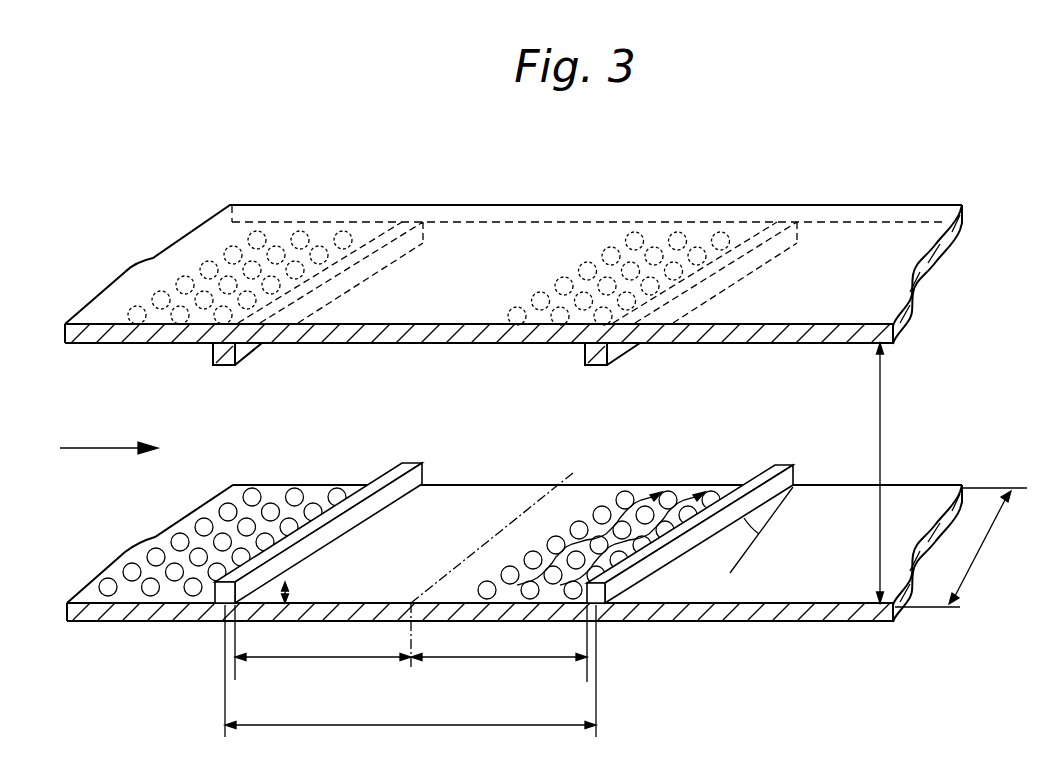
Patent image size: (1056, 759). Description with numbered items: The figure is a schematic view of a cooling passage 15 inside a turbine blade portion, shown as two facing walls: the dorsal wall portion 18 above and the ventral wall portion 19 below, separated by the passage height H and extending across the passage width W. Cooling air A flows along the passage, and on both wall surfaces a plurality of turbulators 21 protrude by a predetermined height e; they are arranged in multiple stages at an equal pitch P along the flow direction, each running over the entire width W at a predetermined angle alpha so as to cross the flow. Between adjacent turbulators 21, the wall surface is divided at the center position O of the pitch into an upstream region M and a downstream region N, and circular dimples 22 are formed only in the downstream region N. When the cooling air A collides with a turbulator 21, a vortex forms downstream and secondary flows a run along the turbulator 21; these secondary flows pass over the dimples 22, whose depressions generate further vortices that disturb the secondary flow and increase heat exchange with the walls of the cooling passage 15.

The cooling passage 15 is at (452, 427).
The dorsal wall portion 18 is at (507, 215).
The ventral wall portion 19 is at (163, 622).
The turbulator 21 is at (752, 238).
The circular dimple 22 is at (638, 233).